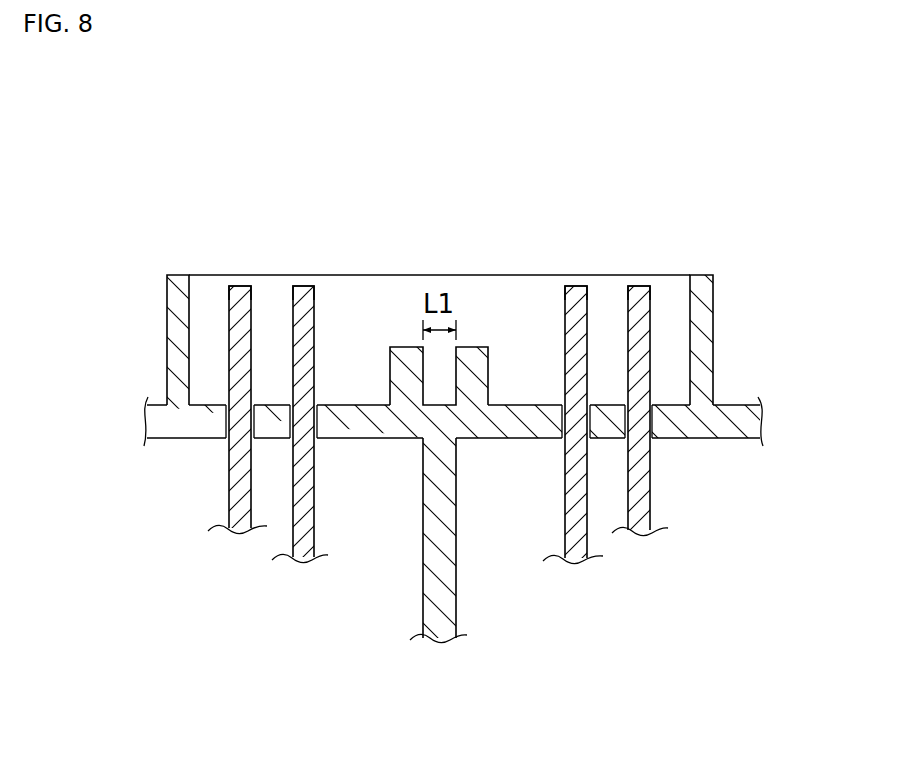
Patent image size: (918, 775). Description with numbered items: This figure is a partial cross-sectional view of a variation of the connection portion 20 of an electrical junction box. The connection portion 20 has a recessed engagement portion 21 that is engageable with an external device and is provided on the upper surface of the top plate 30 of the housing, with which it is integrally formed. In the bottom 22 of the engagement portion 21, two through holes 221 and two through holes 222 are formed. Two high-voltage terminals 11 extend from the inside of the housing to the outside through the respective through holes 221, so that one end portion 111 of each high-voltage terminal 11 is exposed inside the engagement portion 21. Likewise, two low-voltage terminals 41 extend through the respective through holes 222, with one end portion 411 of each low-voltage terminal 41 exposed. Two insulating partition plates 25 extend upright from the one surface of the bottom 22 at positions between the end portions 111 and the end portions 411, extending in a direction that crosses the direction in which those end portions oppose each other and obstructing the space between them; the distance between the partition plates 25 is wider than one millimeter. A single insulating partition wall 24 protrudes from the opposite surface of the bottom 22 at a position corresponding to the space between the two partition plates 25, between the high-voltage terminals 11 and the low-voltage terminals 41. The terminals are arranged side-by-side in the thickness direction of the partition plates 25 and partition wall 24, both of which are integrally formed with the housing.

The connection portion 20 is at (533, 148).
The engagement portion 21 is at (703, 293).
The bottom 22 is at (205, 405).
The top plate 30 is at (732, 412).
The partition wall 24 is at (433, 633).
The partition plate 25 is at (408, 350).
The through hole 221 is at (322, 392).
The through hole 222 is at (558, 395).
The high-voltage terminal 11 is at (238, 527).
The end portion 111 is at (242, 292).
The low-voltage terminal 41 is at (577, 558).
The end portion 411 is at (577, 292).